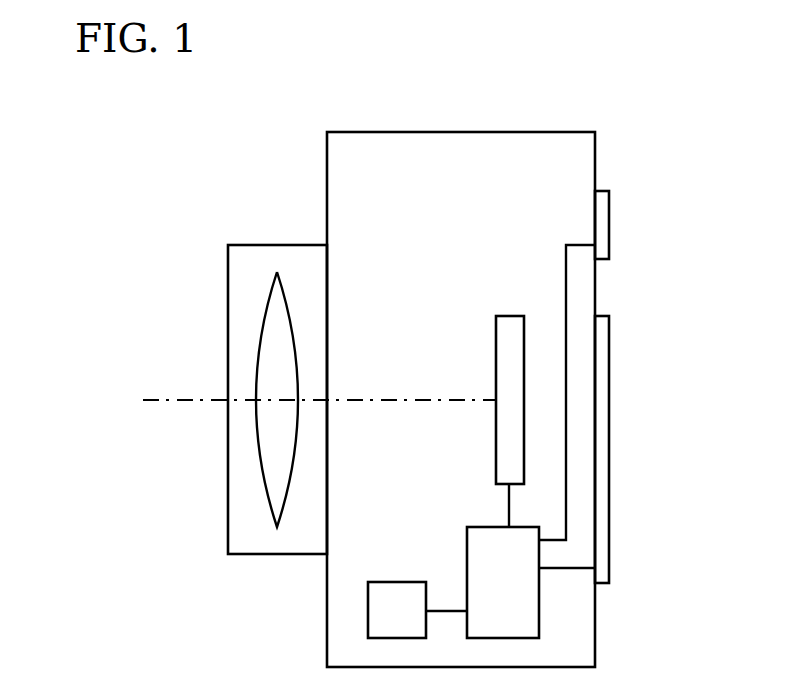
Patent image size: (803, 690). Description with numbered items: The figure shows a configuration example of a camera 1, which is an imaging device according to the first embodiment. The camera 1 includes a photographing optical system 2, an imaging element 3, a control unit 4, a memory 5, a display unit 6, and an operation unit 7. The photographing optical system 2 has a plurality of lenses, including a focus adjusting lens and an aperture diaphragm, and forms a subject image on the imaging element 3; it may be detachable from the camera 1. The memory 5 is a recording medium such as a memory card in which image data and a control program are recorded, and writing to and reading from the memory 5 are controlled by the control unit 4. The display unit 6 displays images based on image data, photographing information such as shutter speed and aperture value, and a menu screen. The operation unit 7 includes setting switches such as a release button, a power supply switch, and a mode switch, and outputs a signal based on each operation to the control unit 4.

The camera 1 is at (243, 162).
The photographing optical system 2 is at (259, 333).
The imaging element 3 is at (497, 345).
The control unit 4 is at (482, 527).
The memory 5 is at (412, 582).
The display unit 6 is at (608, 385).
The operation unit 7 is at (609, 231).